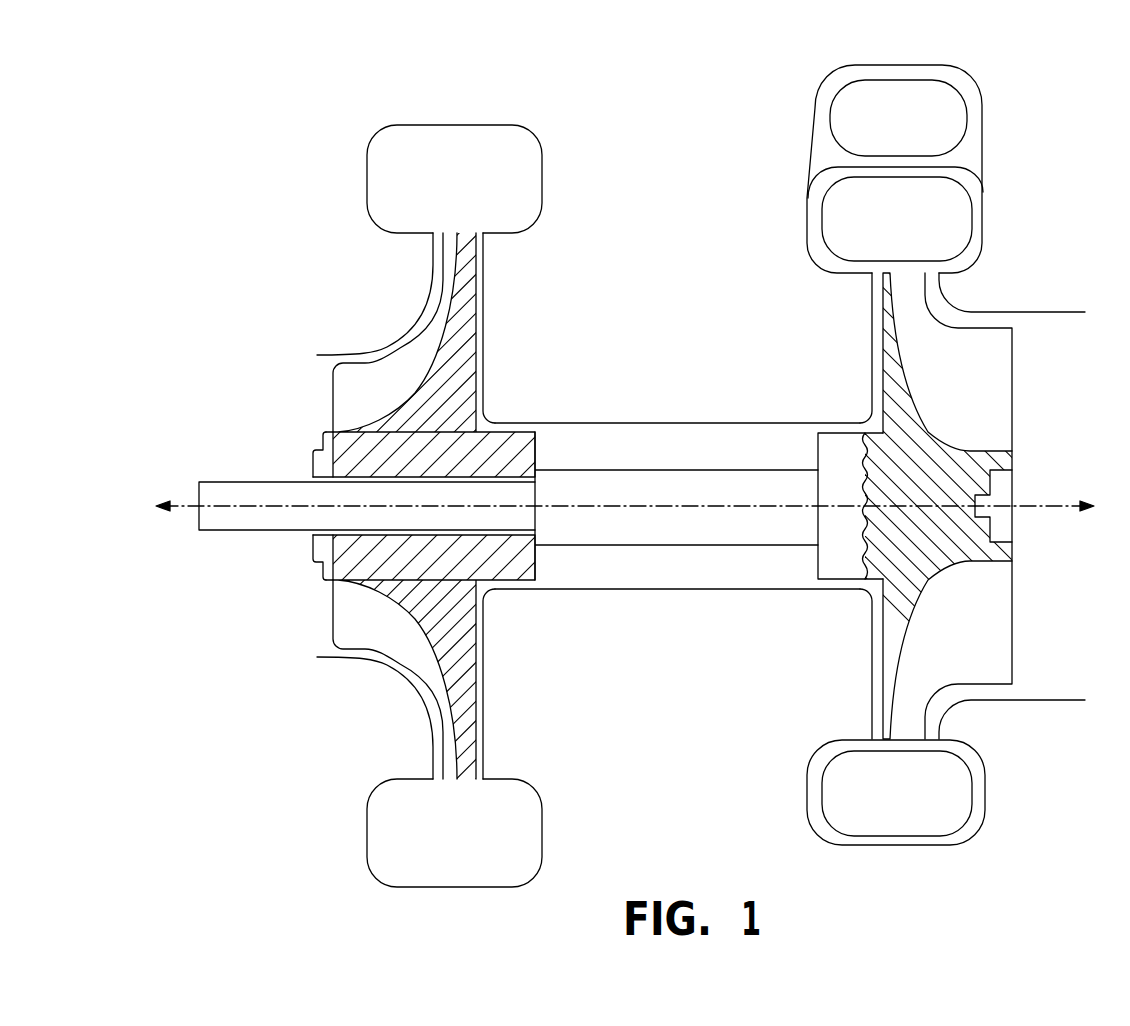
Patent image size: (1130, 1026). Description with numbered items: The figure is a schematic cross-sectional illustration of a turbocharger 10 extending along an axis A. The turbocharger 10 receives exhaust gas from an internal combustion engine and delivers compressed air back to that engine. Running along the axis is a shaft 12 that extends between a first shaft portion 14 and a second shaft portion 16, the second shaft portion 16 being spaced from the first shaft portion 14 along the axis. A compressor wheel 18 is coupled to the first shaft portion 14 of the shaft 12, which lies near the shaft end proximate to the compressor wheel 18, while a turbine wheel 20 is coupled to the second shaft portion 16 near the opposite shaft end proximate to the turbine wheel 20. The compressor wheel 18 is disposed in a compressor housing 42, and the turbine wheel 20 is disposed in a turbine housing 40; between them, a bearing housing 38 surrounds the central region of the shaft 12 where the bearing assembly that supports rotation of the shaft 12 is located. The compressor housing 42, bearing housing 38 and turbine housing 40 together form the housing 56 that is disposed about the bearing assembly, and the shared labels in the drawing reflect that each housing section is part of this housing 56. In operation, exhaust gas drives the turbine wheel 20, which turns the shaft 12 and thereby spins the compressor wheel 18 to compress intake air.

The turbocharger 10 is at (370, 97).
The shaft 12 is at (625, 483).
The first shaft portion 14 is at (542, 500).
The second shaft portion 16 is at (807, 502).
The compressor wheel 18 is at (360, 405).
The turbine wheel 20 is at (930, 452).
The bearing housing 38 is at (708, 423).
The turbine housing 40 is at (983, 158).
The compressor housing 42 is at (365, 198).
The housing 56 is at (675, 476).